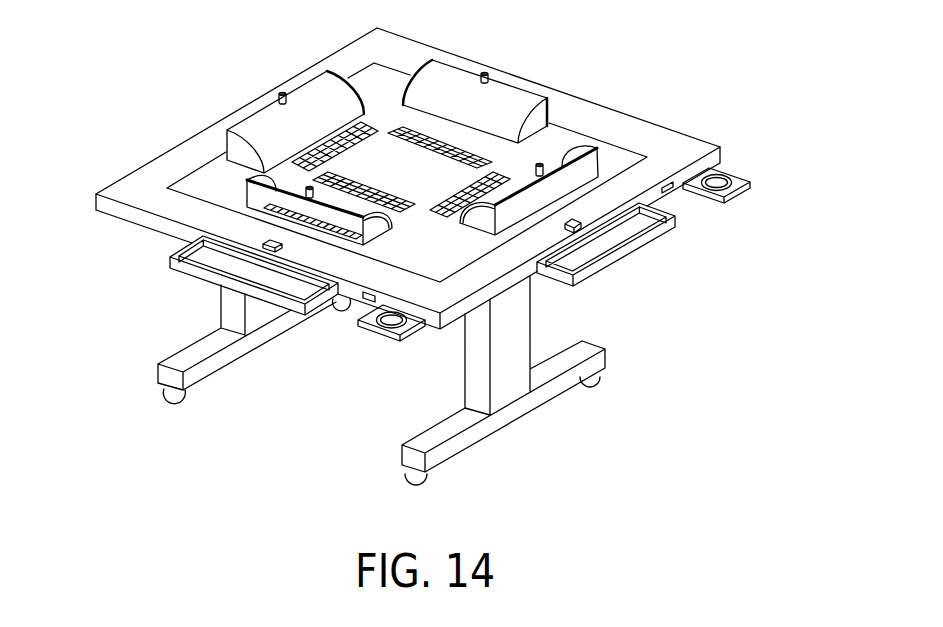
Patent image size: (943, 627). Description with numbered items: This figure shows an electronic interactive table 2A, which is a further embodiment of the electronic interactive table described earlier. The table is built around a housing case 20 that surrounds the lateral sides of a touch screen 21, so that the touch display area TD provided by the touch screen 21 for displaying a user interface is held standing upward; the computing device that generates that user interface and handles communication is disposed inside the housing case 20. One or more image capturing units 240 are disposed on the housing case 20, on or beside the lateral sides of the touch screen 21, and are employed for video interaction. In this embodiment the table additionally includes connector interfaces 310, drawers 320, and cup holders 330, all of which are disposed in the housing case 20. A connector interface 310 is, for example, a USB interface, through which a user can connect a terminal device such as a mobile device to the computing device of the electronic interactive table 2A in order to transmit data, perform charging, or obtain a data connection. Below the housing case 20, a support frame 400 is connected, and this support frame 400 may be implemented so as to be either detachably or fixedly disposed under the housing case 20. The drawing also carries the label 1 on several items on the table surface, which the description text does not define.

The tile cover 1 is at (268, 118).
The electronic interactive table 2A is at (489, 47).
The touch display area TD is at (373, 73).
The housing case 20 is at (117, 182).
The touch screen 21 is at (198, 163).
The image capturing unit 240 is at (262, 243).
The connector interface 310 is at (368, 303).
The drawer 320 is at (272, 300).
The cup holder 330 is at (383, 336).
The support frame 400 is at (186, 357).